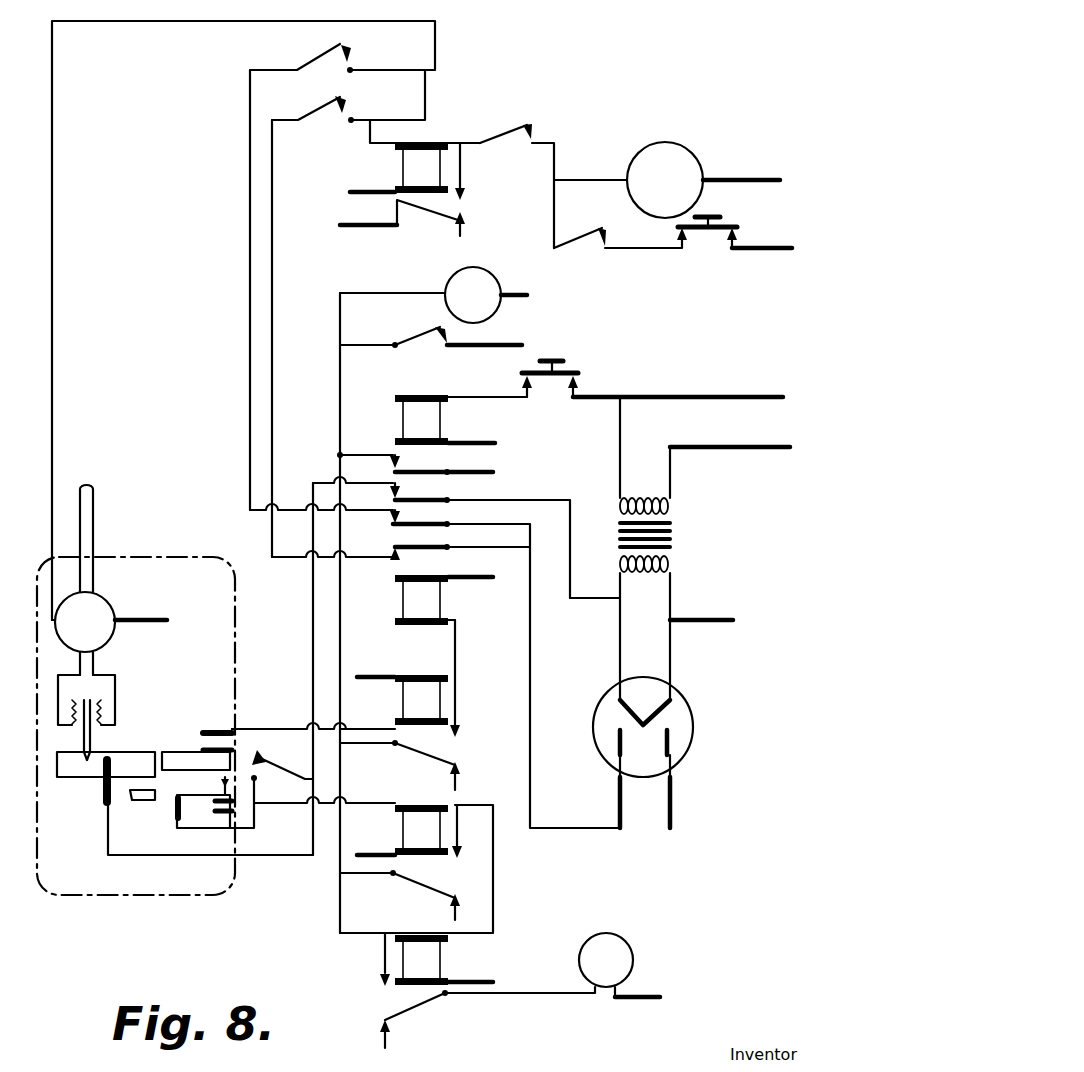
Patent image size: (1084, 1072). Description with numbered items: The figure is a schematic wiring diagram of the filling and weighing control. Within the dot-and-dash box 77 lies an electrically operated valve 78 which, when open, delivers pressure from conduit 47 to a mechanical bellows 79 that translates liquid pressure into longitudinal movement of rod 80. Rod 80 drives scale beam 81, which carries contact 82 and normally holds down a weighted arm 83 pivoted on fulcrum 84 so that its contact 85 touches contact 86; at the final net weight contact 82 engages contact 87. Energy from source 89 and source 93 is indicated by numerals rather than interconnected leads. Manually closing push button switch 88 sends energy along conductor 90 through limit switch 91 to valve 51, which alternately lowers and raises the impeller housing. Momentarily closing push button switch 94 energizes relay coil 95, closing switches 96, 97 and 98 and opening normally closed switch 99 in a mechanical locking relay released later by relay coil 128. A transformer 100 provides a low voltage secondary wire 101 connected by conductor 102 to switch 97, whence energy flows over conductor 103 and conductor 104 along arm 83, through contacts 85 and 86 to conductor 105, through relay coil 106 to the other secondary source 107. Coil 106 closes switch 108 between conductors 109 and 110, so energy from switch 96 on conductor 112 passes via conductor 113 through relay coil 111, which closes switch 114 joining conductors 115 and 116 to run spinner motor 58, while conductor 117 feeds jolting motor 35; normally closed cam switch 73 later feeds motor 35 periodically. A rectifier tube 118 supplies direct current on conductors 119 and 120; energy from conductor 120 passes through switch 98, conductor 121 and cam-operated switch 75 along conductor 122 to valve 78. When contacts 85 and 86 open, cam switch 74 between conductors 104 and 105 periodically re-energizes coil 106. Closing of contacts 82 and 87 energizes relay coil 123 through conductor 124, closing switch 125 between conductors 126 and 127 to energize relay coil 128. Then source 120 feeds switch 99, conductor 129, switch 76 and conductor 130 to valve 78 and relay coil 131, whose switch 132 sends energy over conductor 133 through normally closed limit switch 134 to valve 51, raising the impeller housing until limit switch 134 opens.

The jolting motor 35 is at (484, 269).
The conduit 47 is at (89, 515).
The valve 51 is at (678, 153).
The spinner motor 58 is at (623, 946).
The switch 73 is at (419, 340).
The switch 74 is at (263, 764).
The switch 75 is at (306, 59).
The switch 76 is at (311, 102).
The box 77 is at (203, 627).
The valve 78 is at (101, 608).
The mechanical bellows 79 is at (108, 693).
The rod 80 is at (88, 742).
The scale beam 81 is at (125, 764).
The contact 82 is at (210, 748).
The arm 83 is at (173, 798).
The fulcrum 84 is at (177, 816).
The contact 85 is at (215, 803).
The contact 86 is at (215, 813).
The contact 87 is at (215, 729).
The push button switch 88 is at (713, 233).
The source of energy 89 is at (355, 227).
The conductor 90 is at (647, 252).
The limit switch 91 is at (583, 233).
The source of energy 93 is at (738, 179).
The push button switch 94 is at (568, 368).
The relay coil 95 is at (440, 420).
The switch 96 is at (418, 468).
The switch 97 is at (420, 497).
The switch 98 is at (425, 523).
The switch 99 is at (427, 546).
The transformer 100 is at (692, 533).
The wire 101 is at (618, 580).
The conductor 102 is at (530, 498).
The conductor 103 is at (313, 649).
The conductor 104 is at (108, 843).
The conductor 105 is at (277, 806).
The relay coil 106 is at (410, 825).
The source 107 is at (371, 674).
The switch 108 is at (420, 887).
The conductor 109 is at (458, 830).
The conductor 110 is at (368, 873).
The relay coil 111 is at (437, 956).
The conductor 112 is at (357, 453).
The conductor 113 is at (340, 609).
The switch 114 is at (415, 1012).
The conductor 115 is at (384, 957).
The conductor 116 is at (545, 997).
The conductor 117 is at (340, 322).
The tube 118 is at (682, 720).
The conductor 119 is at (355, 195).
The conductor 120 is at (533, 657).
The conductor 121 is at (249, 365).
The conductor 122 is at (438, 42).
The relay coil 123 is at (415, 702).
The conductor 124 is at (275, 727).
The switch 125 is at (407, 751).
The conductor 126 is at (363, 745).
The conductor 127 is at (458, 669).
The relay coil 128 is at (440, 602).
The conductor 129 is at (276, 560).
The conductor 130 is at (370, 116).
The relay coil 131 is at (418, 163).
The switch 132 is at (428, 210).
The conductor 133 is at (462, 160).
The limit switch 134 is at (497, 133).